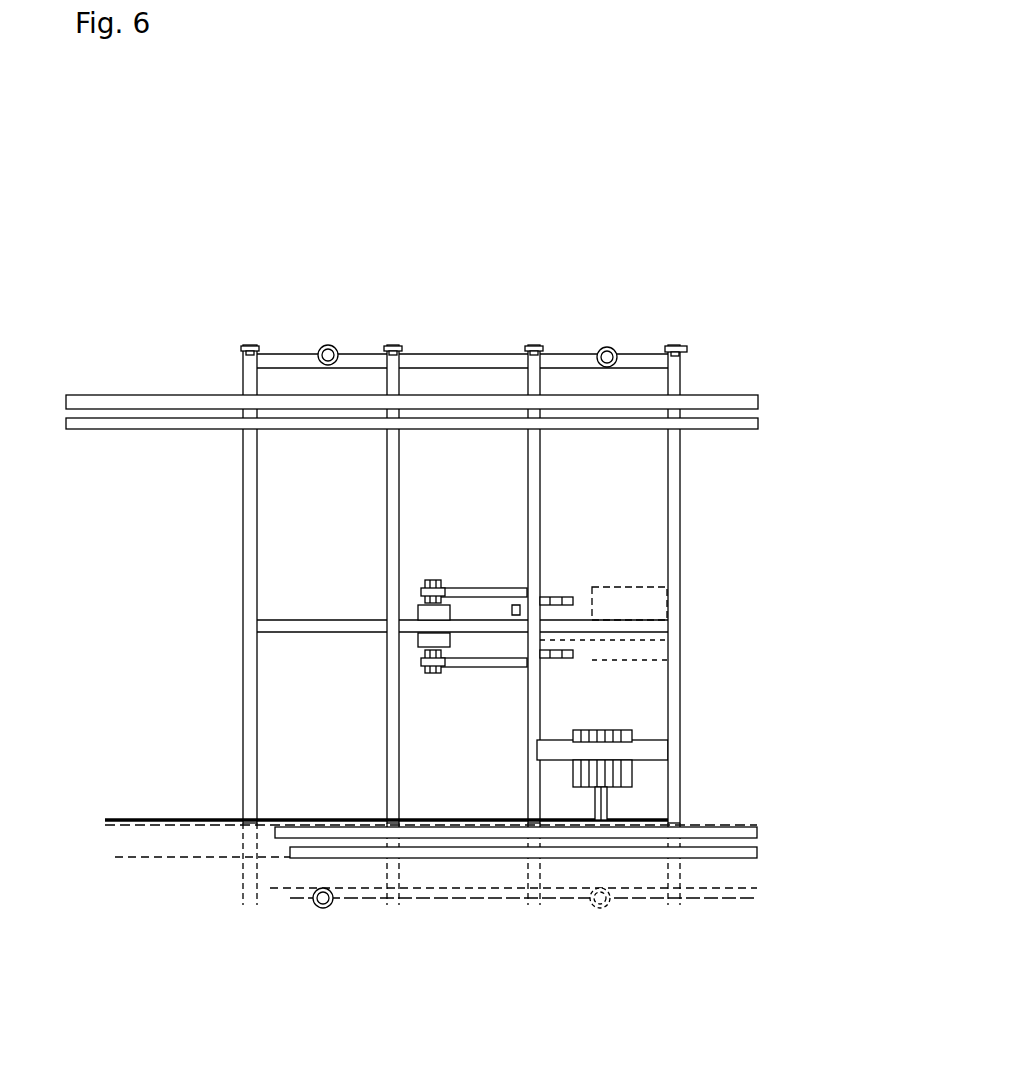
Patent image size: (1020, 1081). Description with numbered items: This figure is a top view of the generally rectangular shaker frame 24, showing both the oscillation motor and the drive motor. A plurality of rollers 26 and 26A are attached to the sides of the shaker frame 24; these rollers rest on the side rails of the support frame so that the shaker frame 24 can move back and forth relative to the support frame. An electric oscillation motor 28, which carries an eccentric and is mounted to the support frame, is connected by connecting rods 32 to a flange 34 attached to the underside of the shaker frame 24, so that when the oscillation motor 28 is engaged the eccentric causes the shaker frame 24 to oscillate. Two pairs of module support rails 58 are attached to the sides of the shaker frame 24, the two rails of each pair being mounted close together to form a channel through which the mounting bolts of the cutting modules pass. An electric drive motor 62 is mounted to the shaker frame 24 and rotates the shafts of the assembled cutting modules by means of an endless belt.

The shaker frame 24 is at (190, 588).
The roller 26 is at (678, 345).
The roller 26A is at (606, 346).
The oscillation motor 28 is at (633, 587).
The connecting rods 32 is at (478, 588).
The flange 34 is at (425, 649).
The module support rails 58 is at (752, 828).
The drive motor 62 is at (622, 728).